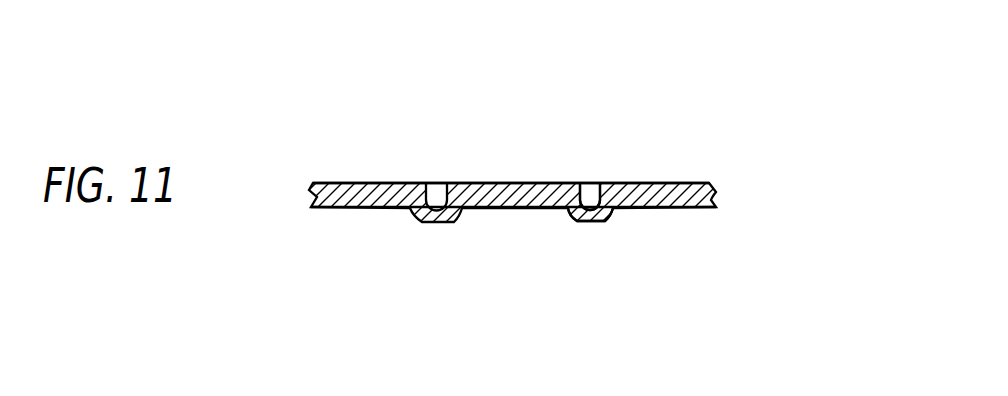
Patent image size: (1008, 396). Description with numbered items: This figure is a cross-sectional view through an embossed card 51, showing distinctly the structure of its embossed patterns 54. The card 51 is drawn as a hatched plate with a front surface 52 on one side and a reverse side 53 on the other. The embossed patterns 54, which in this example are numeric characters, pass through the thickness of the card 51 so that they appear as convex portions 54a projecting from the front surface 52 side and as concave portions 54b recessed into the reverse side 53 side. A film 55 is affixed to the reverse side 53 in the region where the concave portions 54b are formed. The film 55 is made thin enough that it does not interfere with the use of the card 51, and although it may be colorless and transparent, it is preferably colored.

The card 51 is at (728, 142).
The front surface 52 is at (383, 208).
The reverse side 53 is at (387, 183).
The embossed patterns 54 is at (562, 232).
The convex portions 54a is at (612, 223).
The concave portions 54b is at (590, 192).
The film 55 is at (448, 183).